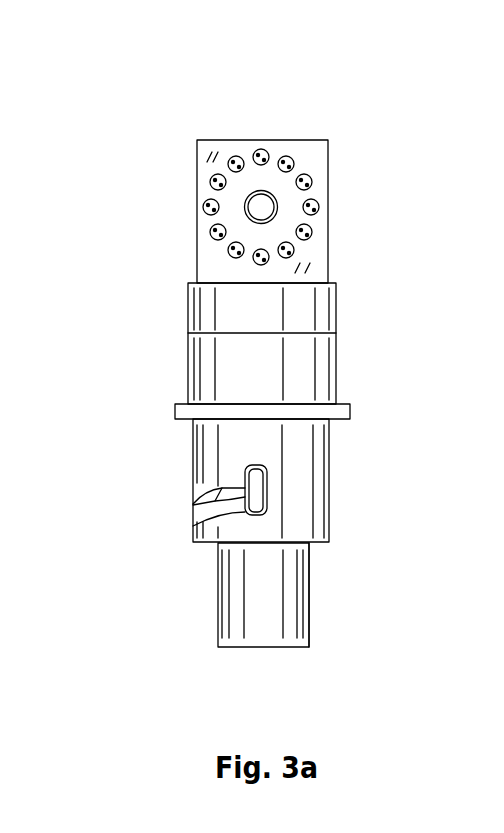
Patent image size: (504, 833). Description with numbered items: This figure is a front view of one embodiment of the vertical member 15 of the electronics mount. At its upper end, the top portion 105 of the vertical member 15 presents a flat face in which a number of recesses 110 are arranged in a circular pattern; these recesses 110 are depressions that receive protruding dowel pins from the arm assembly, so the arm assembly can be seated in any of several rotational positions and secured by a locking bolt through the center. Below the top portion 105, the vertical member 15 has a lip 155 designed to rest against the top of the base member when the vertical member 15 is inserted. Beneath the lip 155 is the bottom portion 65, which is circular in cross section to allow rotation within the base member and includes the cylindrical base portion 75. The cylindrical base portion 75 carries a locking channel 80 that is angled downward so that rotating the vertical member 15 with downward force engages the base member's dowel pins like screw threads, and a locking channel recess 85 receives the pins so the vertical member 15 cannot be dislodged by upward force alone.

The vertical member 15 is at (173, 648).
The top portion 105 is at (503, 223).
The recesses 110 is at (305, 174).
The lip 155 is at (350, 411).
The locking channel recess 85 is at (262, 471).
The locking channel 80 is at (236, 502).
The bottom portion 65 is at (330, 590).
The cylindrical base portion 75 is at (310, 622).